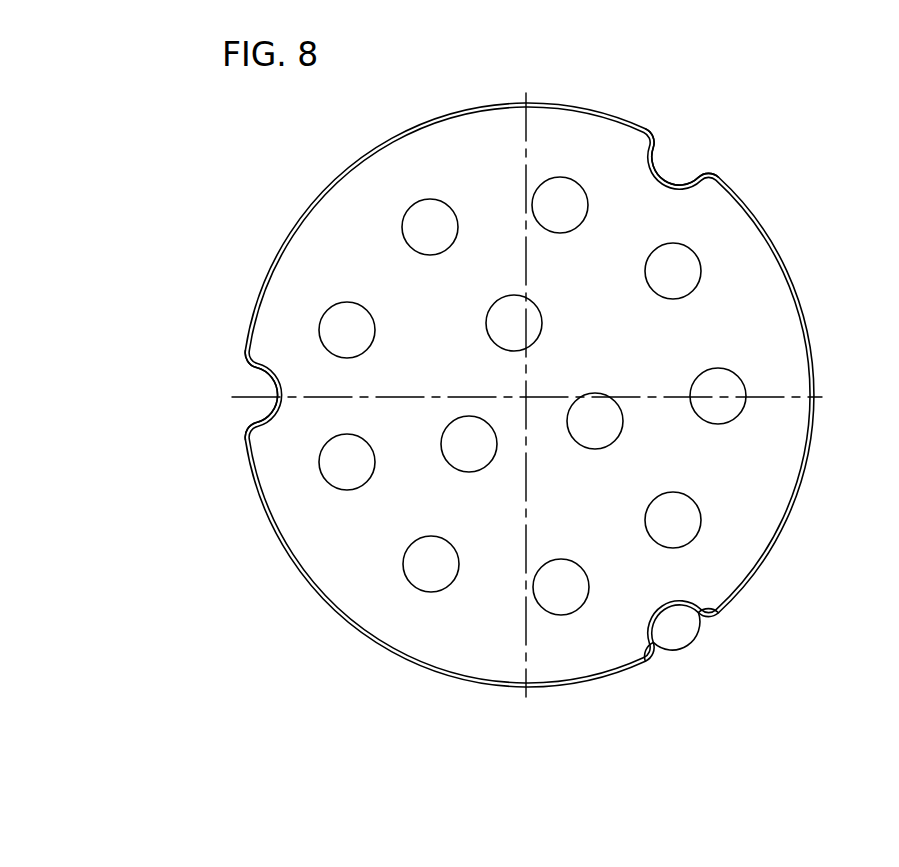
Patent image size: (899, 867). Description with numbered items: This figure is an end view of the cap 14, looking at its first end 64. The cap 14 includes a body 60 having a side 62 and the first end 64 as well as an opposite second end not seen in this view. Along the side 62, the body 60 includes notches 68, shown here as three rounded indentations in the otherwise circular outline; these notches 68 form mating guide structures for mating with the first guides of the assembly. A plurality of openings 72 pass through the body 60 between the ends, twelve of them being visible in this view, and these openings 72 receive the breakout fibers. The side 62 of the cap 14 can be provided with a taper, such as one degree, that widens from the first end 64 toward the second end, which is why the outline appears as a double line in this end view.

The cap 14 is at (771, 233).
The body 60 is at (467, 661).
The side 62 is at (783, 533).
The first end 64 is at (760, 297).
The notches 68 is at (680, 172).
The openings 72 is at (428, 199).